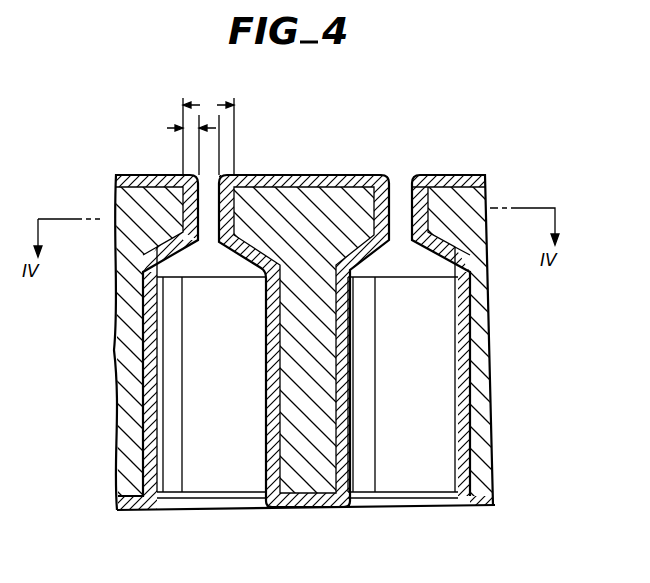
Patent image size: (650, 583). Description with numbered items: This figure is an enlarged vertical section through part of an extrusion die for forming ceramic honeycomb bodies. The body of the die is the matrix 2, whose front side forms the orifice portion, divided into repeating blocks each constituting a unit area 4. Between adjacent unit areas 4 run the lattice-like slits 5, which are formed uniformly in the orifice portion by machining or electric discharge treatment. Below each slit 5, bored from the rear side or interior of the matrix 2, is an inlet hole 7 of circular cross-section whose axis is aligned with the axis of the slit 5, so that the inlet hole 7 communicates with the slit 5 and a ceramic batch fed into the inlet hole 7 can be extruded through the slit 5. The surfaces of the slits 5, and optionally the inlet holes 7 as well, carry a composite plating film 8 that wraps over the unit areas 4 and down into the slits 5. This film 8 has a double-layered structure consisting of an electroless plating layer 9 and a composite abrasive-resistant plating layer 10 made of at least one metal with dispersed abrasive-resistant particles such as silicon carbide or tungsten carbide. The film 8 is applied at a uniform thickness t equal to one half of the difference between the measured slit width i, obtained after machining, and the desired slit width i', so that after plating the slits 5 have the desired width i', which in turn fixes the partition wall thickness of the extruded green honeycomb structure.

The matrix of the die 2 is at (121, 244).
The unit area of the orifice portion 4 is at (325, 182).
The slit of the die 5 is at (401, 195).
The inlet hole 7 is at (217, 478).
The composite plating film 8 is at (492, 311).
The electroless plating layer 9 is at (476, 311).
The composite abrasive-resistant plating layer 10 is at (475, 176).
The thickness of the composite plating film t is at (181, 125).
The measured width of slit i is at (208, 134).
The desired width of slit i' is at (228, 135).